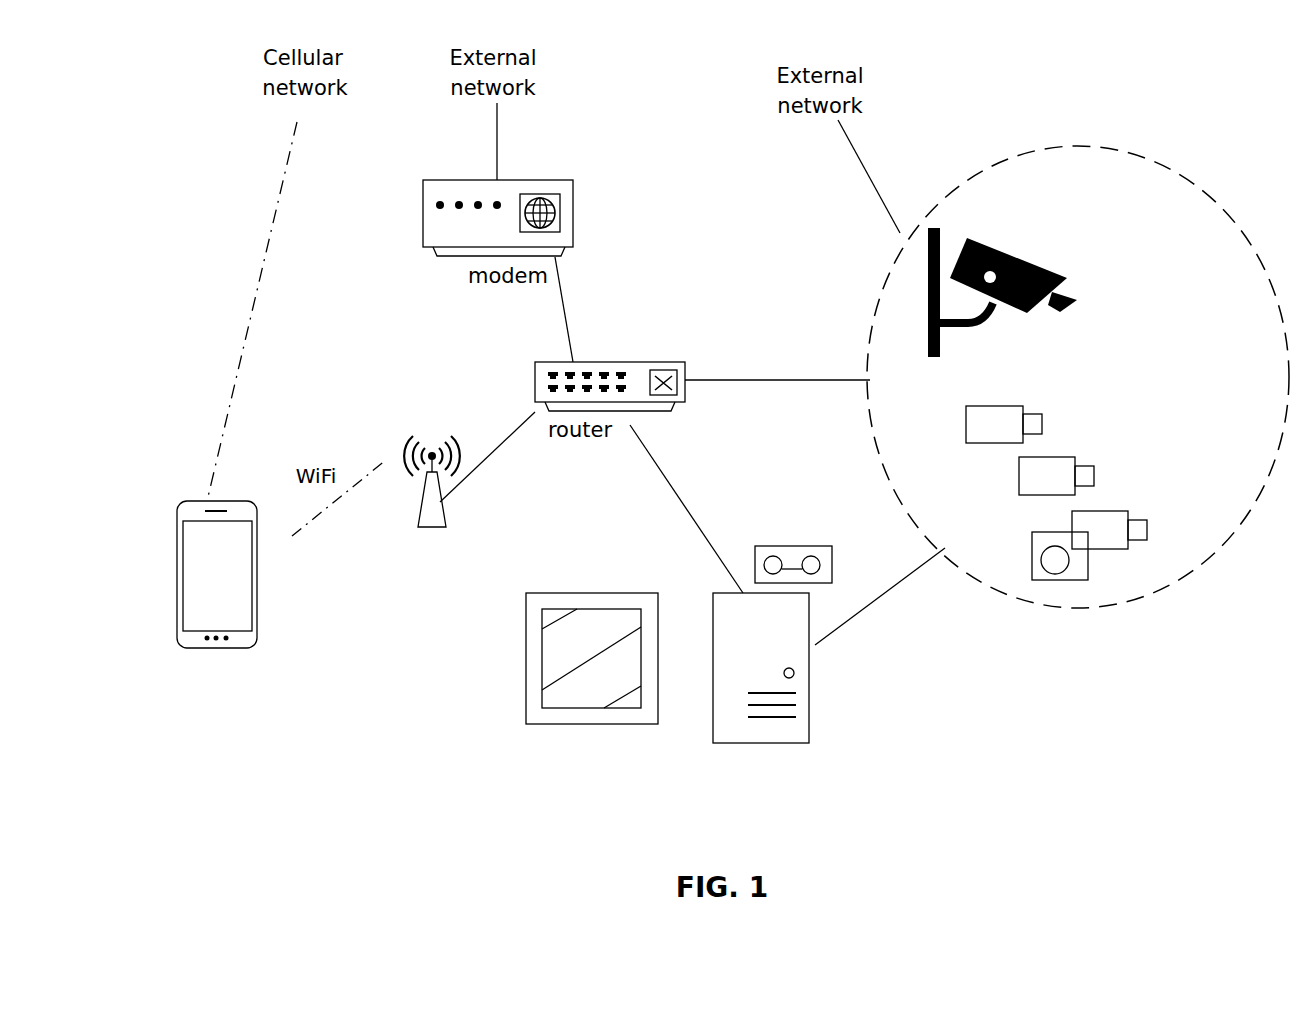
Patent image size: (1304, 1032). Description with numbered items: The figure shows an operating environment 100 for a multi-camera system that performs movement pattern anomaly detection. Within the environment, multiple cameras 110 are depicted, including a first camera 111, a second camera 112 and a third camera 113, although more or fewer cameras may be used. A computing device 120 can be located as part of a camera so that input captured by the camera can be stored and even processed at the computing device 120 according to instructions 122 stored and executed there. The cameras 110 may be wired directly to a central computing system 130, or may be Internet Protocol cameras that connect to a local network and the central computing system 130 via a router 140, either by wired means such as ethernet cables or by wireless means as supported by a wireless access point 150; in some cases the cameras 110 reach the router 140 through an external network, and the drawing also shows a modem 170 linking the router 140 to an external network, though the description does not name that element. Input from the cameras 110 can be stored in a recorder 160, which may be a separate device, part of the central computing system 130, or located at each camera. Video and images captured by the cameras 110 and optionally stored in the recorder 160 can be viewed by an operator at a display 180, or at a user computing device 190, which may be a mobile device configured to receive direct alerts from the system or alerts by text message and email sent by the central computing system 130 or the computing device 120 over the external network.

The operating environment 100 is at (115, 170).
The cameras 110 is at (1078, 377).
The first camera 111 is at (1117, 511).
The second camera 112 is at (1063, 457).
The third camera 113 is at (1015, 406).
The computing device 120 is at (1072, 580).
The instructions 122 is at (1052, 564).
The central computing system 130 is at (761, 668).
The router 140 is at (636, 362).
The wireless access point 150 is at (421, 527).
The recorder 160 is at (767, 548).
The modem 170 is at (575, 197).
The display 180 is at (526, 680).
The user computing device 190 is at (177, 572).